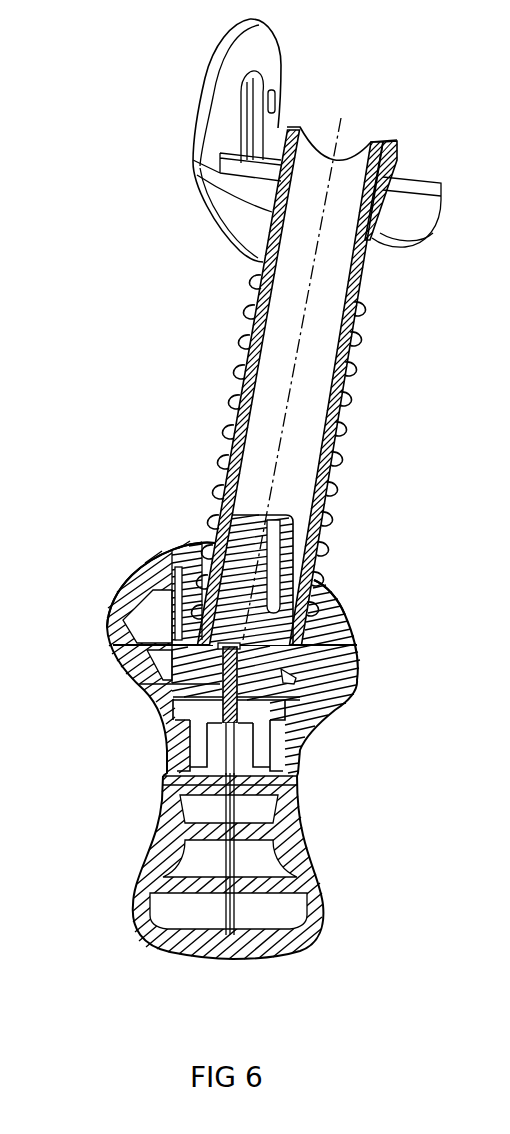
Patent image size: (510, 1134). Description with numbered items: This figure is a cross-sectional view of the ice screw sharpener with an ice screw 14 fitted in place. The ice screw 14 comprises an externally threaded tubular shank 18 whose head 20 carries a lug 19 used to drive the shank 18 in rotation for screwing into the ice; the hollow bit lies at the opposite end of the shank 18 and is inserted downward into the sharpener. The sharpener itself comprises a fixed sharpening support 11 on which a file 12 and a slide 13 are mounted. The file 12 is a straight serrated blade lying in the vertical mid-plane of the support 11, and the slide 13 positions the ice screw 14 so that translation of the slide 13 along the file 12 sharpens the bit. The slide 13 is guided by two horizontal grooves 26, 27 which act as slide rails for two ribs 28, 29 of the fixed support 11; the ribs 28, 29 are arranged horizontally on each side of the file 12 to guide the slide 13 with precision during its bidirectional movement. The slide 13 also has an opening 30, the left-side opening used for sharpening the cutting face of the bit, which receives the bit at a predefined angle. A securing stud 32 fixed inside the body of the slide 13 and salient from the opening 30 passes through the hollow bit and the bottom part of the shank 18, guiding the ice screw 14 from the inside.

The fixed sharpening support 11 is at (194, 878).
The file 12 is at (140, 789).
The slide 13 is at (287, 663).
The ice screw 14 is at (338, 322).
The externally threaded tubular shank 18 is at (315, 364).
The lug 19 is at (272, 131).
The head 20 is at (417, 165).
The horizontal groove 26 is at (131, 733).
The horizontal groove 27 is at (345, 731).
The rib 28 is at (146, 783).
The rib 29 is at (340, 782).
The opening 30 is at (279, 585).
The securing stud 32 is at (314, 566).